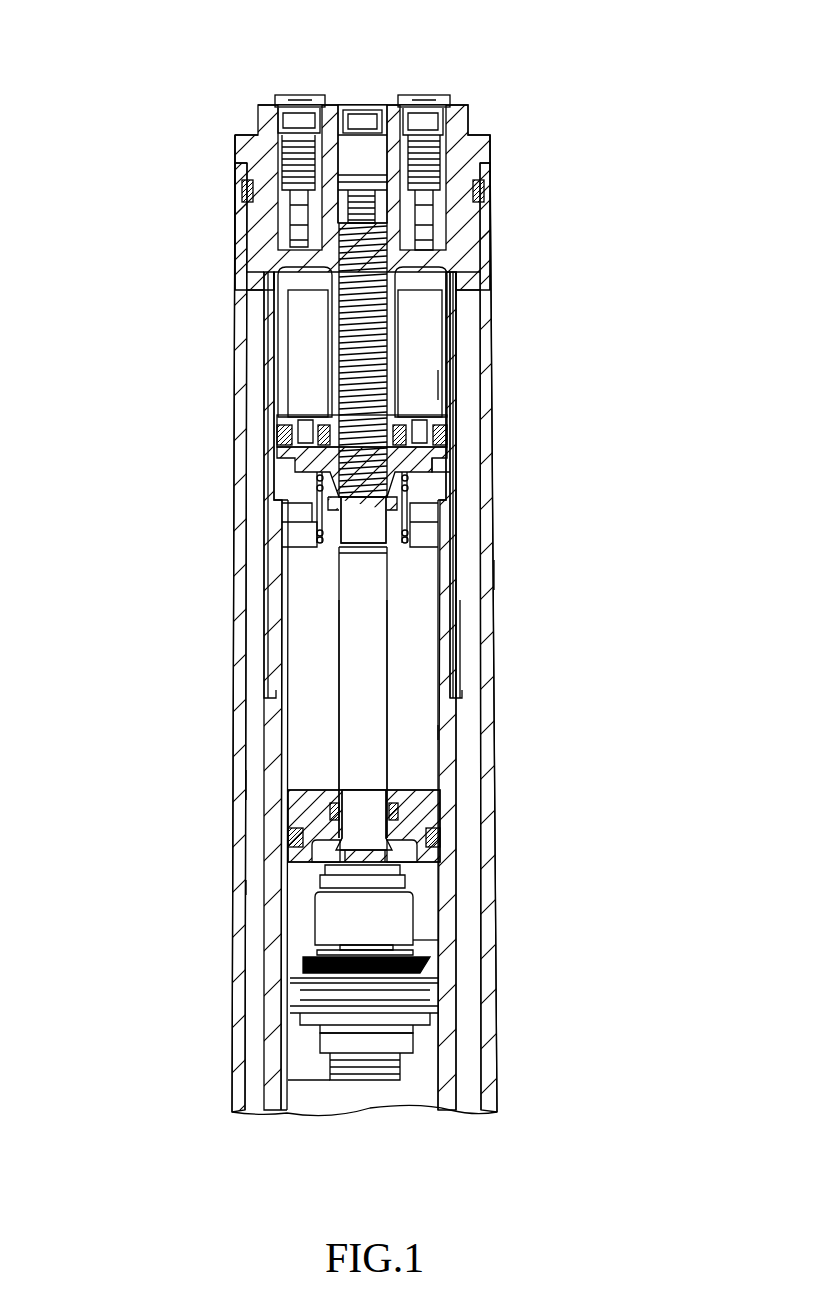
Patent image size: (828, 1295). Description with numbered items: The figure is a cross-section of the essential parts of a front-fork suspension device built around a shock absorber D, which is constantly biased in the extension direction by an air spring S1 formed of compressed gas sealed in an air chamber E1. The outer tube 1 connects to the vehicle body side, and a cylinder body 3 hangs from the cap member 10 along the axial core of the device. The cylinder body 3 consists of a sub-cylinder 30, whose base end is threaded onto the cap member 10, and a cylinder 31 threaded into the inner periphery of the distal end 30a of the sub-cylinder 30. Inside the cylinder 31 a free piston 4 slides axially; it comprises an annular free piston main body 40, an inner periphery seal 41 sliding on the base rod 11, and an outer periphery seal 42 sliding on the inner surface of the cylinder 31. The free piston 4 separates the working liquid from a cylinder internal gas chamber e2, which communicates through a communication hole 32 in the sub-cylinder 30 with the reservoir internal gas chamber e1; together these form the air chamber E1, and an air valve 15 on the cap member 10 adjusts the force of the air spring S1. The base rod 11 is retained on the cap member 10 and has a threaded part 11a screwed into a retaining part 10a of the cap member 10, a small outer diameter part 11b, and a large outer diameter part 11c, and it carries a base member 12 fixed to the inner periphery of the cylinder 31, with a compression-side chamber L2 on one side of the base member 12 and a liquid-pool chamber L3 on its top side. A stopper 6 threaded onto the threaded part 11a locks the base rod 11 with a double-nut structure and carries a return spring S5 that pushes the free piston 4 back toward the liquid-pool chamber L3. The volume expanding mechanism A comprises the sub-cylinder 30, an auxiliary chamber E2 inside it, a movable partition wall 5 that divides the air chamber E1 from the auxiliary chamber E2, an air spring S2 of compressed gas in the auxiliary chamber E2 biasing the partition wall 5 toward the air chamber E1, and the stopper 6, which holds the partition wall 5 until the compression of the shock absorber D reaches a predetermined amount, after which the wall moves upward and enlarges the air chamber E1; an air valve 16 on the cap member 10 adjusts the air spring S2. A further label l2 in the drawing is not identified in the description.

The outer tube 1 is at (488, 1088).
The cylinder body 3 is at (470, 920).
The free piston 4 is at (458, 808).
The movable partition wall 5 is at (447, 432).
The stopper 6 is at (277, 456).
The cap member 10 is at (468, 106).
The retaining part 10a is at (330, 350).
The base rod 11 is at (330, 669).
The threaded part 11a is at (328, 302).
The small outer diameter part 11b is at (356, 528).
The large outer diameter part 11c is at (356, 712).
The base member 12 is at (300, 987).
The air valve 15 is at (284, 100).
The air valve 16 is at (436, 98).
The sub-cylinder 30 is at (462, 340).
The distal end 30a is at (465, 650).
The cylinder 31 is at (455, 1035).
The communication hole 32 is at (277, 488).
The free piston main body 40 is at (298, 815).
The inner periphery seal 41 is at (445, 775).
The outer periphery seal 42 is at (440, 845).
The volume expanding mechanism A is at (255, 392).
The shock absorber D is at (500, 575).
The air chamber E1 is at (250, 788).
The auxiliary chamber E2 is at (447, 384).
The air spring S1 is at (266, 606).
The air spring S2 is at (458, 290).
The return spring S5 is at (458, 488).
The reservoir internal gas chamber e1 is at (262, 886).
The cylinder internal gas chamber e2 is at (456, 730).
The compression-side chamber L2 is at (305, 1080).
The liquid-pool chamber L3 is at (308, 925).
The length l2 is at (447, 944).